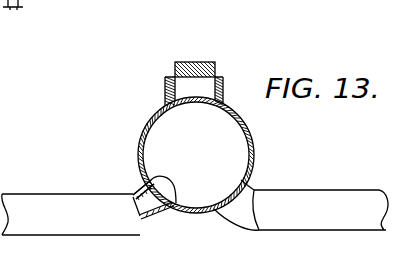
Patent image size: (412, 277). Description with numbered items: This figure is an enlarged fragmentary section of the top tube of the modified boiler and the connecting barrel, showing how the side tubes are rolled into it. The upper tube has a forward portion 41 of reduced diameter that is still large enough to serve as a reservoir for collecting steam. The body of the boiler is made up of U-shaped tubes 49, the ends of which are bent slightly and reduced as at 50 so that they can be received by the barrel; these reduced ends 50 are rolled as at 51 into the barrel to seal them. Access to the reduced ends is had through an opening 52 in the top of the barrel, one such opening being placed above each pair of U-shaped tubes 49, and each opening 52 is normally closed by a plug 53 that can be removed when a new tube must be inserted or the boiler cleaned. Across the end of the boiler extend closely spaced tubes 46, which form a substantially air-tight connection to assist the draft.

The forward portion of the upper tube 41 is at (164, 130).
The tubes 46 is at (11, 22).
The U-shaped tubes 49 is at (72, 224).
The reduced ends 50 is at (136, 224).
The rolled connection 51 is at (148, 185).
The opening 52 is at (200, 92).
The plugs 53 is at (199, 62).